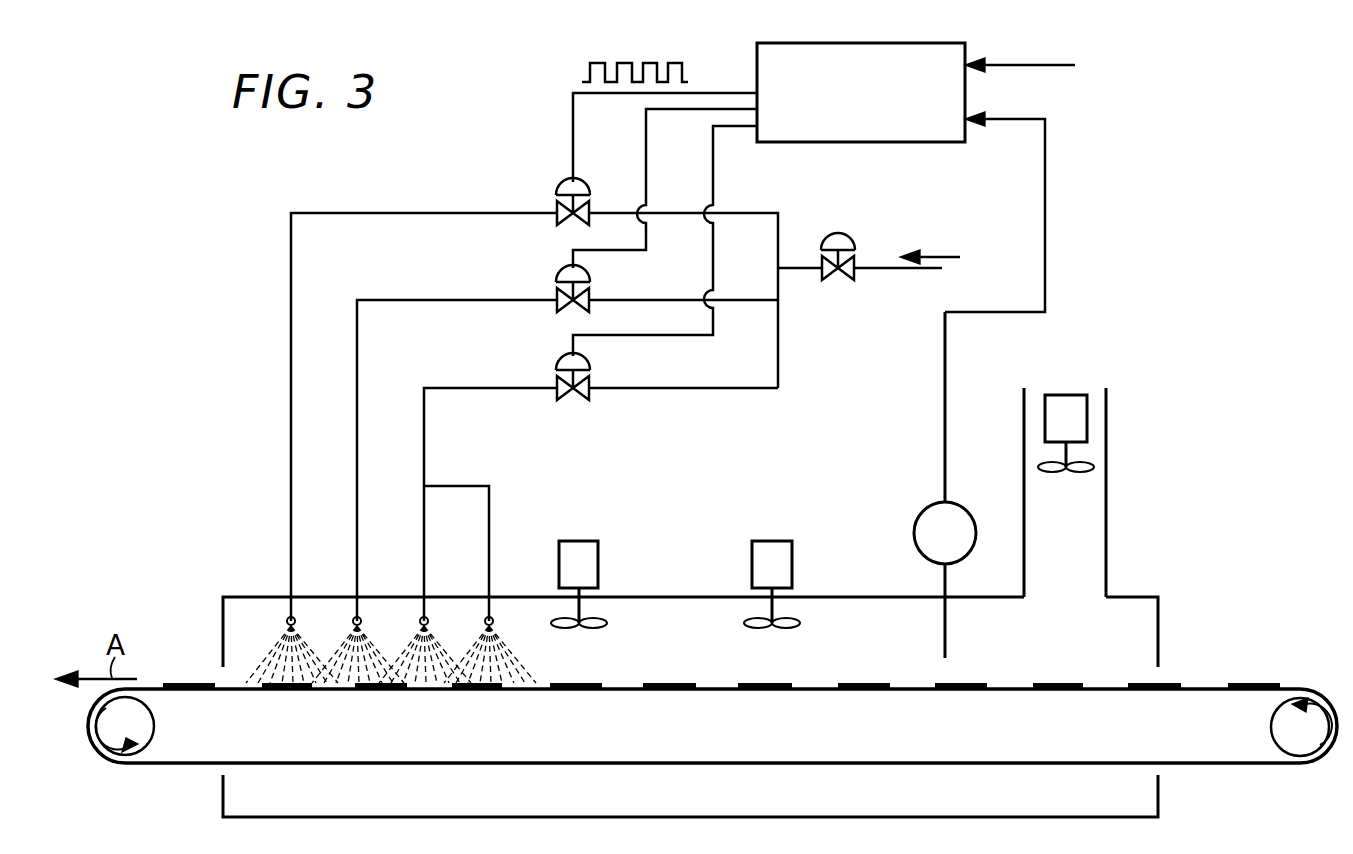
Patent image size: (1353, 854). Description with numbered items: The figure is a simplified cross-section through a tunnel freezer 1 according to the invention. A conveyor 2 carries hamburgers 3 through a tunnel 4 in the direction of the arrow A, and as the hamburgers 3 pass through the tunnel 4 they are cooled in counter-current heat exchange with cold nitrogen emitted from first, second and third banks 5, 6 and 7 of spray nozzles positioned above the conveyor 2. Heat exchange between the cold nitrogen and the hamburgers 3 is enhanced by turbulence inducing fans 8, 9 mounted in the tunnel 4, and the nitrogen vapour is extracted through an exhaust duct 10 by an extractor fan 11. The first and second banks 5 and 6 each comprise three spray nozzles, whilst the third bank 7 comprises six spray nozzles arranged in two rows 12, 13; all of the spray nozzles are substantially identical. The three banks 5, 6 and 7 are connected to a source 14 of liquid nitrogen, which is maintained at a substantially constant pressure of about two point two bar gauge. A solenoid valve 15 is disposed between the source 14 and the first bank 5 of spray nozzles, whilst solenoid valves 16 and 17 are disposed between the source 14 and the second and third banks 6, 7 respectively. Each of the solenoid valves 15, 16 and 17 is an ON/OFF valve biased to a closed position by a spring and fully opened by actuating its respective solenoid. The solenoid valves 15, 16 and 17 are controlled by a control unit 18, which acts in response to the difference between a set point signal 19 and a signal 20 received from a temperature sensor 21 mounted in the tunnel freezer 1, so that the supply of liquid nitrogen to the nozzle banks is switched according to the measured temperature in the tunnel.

The tunnel freezer 1 is at (665, 596).
The conveyor 2 is at (178, 766).
The hamburgers 3 is at (192, 683).
The tunnel 4 is at (700, 655).
The first bank of spray nozzles 5 is at (288, 612).
The second bank of spray nozzles 6 is at (354, 612).
The third bank of spray nozzles 7 is at (424, 486).
The turbulence inducing fan 8 is at (584, 566).
The turbulence inducing fan 9 is at (778, 566).
The exhaust duct 10 is at (1107, 506).
The extractor fan 11 is at (1070, 420).
The row of spray nozzles 12 is at (421, 612).
The row of spray nozzles 13 is at (492, 612).
The source of liquid nitrogen 14 is at (885, 272).
The solenoid valve 15 is at (560, 205).
The solenoid valve 16 is at (560, 292).
The solenoid valve 17 is at (560, 380).
The control unit 18 is at (874, 106).
The set point signal 19 is at (1032, 66).
The signal 20 is at (1046, 210).
The temperature sensor 21 is at (920, 510).